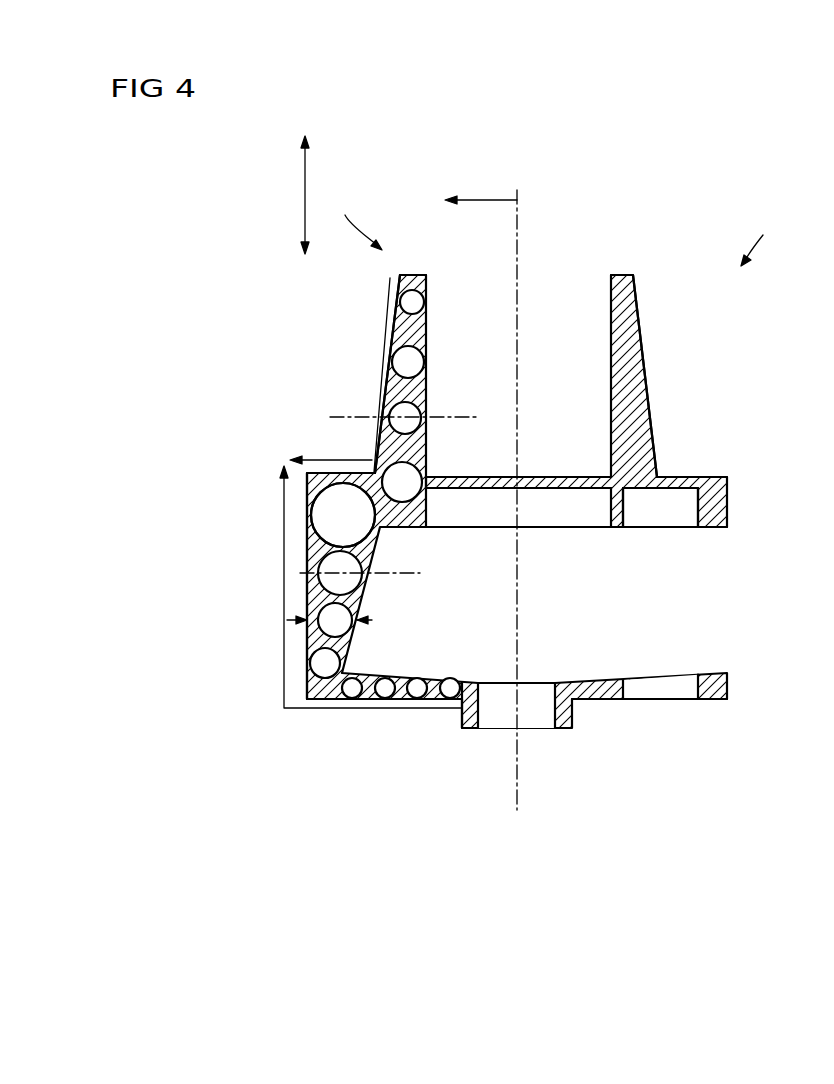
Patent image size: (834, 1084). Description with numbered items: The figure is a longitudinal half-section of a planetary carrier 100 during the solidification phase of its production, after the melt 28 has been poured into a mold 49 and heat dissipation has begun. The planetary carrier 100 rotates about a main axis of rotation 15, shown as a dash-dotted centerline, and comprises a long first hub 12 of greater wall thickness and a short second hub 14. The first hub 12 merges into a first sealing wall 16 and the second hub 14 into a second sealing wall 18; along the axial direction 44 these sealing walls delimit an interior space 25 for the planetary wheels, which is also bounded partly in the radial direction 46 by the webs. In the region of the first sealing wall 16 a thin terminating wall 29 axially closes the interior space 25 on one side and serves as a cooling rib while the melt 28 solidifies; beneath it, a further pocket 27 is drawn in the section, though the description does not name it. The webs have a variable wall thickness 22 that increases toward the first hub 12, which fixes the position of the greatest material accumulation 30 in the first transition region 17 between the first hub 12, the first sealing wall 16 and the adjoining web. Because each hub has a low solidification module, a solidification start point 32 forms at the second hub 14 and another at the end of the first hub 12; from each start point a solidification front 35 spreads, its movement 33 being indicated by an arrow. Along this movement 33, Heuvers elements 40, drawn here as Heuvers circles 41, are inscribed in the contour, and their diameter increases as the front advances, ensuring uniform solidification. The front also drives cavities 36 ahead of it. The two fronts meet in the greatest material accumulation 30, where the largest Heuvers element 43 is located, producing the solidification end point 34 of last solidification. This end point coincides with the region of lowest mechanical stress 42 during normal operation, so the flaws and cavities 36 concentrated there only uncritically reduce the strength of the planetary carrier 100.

The planetary carrier 100 is at (765, 235).
The first hub 12 is at (631, 310).
The second hub 14 is at (556, 728).
The main axis of rotation 15 is at (520, 229).
The first sealing wall 16 is at (678, 480).
The first transition region 17 is at (375, 476).
The second sealing wall 18 is at (603, 698).
The wall thickness 22 is at (308, 636).
The interior space 25 is at (663, 648).
The groove 27 is at (658, 517).
The melt 28 is at (637, 370).
The terminating wall 29 is at (553, 480).
The greatest material accumulation 30 is at (343, 520).
The solidification start point 32 is at (409, 275).
The movement of the solidification front 33 is at (388, 292).
The solidification end point 34 is at (313, 517).
The solidification front 35 is at (353, 415).
The cavities 36 is at (402, 629).
The Heuvers element 40 is at (416, 408).
The Heuvers circle 41 is at (348, 690).
The region of lowest mechanical stress 42 is at (320, 476).
The largest Heuvers element 43 is at (343, 515).
The axial direction 44 is at (305, 192).
The radial direction 46 is at (485, 200).
The mold 49 is at (357, 218).